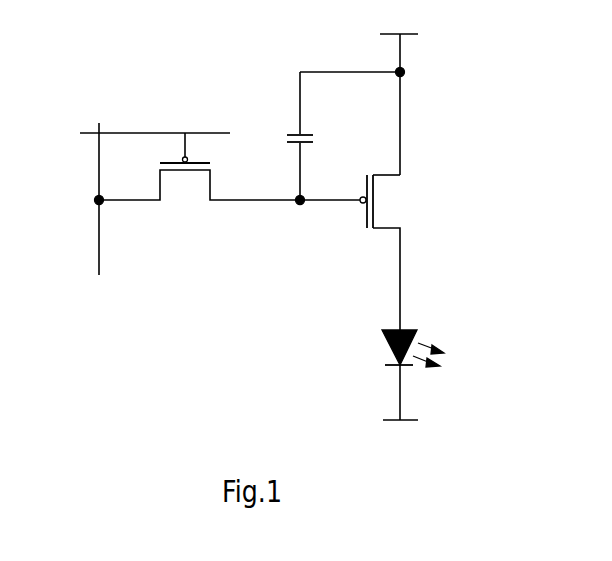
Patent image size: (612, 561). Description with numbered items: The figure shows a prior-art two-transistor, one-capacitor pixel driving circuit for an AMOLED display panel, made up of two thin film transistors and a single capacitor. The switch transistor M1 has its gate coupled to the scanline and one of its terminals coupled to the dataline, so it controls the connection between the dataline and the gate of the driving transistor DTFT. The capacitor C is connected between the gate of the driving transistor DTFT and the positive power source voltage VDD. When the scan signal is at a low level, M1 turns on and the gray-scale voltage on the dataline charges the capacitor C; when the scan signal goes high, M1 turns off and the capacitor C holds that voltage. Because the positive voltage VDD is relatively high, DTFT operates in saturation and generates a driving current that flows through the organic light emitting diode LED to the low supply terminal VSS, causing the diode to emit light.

The TFT M1 is at (199, 172).
The capacitor C is at (343, 138).
The driving TFT DTFT is at (370, 252).
The OLED LED is at (379, 374).
The positive voltage of the power source VDD is at (398, 89).
The ground voltage VSS is at (376, 418).
The scan line scanline is at (155, 112).
The data line dataline is at (75, 200).